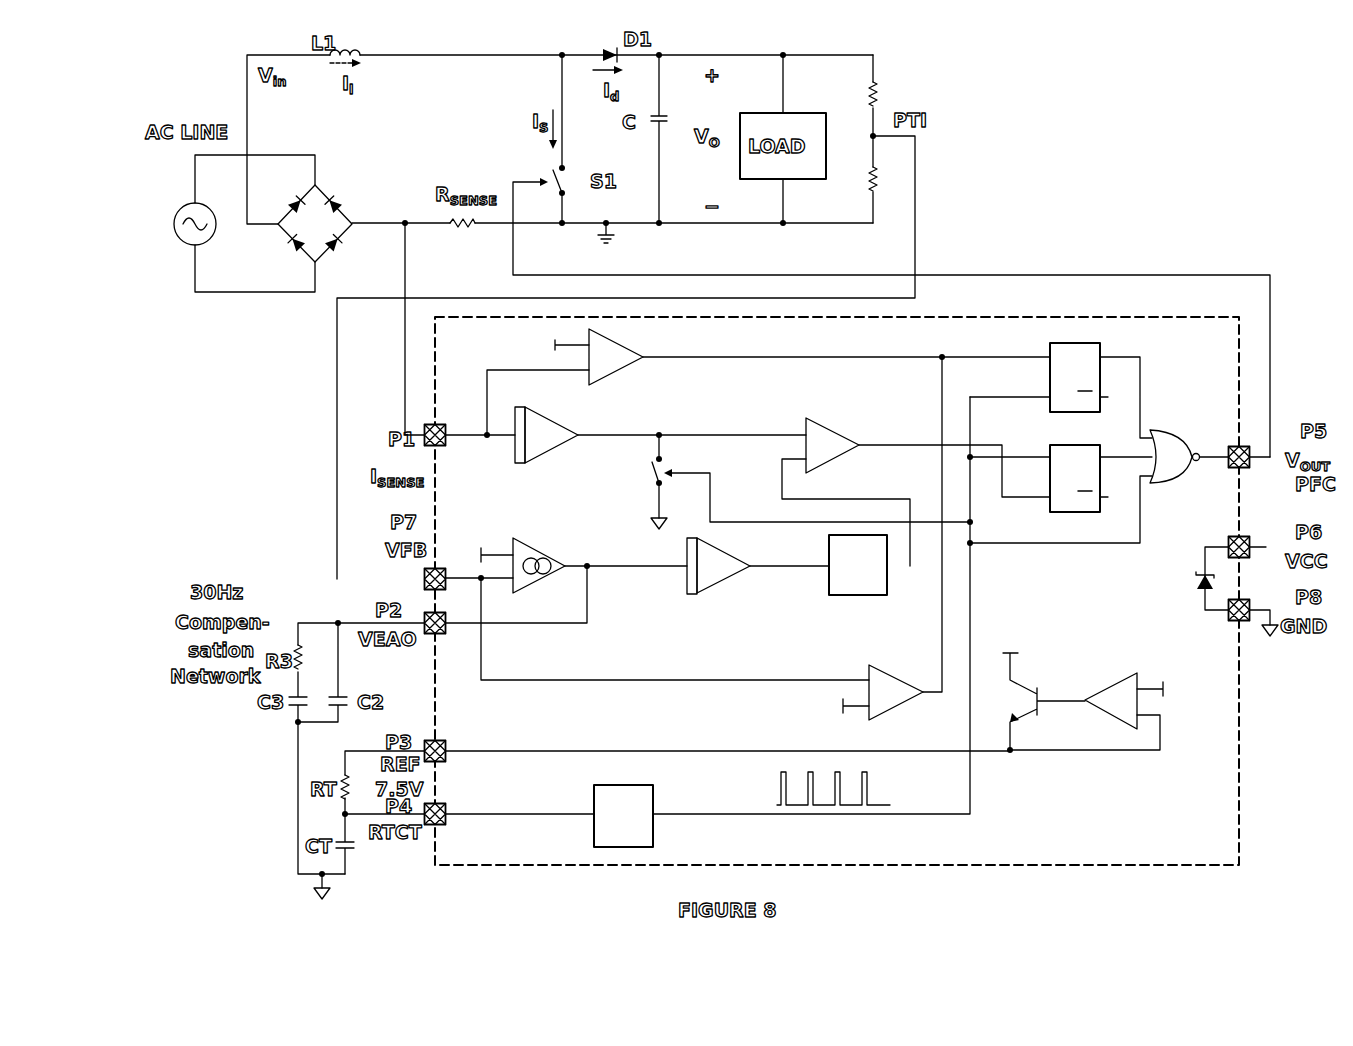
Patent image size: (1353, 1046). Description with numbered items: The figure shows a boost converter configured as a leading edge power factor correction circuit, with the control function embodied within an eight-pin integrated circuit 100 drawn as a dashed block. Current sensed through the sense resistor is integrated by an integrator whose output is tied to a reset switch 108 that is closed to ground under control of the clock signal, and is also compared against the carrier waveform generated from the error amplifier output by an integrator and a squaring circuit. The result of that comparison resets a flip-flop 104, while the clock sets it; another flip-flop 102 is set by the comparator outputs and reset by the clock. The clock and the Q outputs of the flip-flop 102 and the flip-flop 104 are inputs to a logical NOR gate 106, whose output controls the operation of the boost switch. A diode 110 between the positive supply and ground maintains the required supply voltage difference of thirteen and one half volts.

The power factor correction circuit 100 is at (1120, 312).
The flip-flop 102 is at (1040, 348).
The flip-flop 104 is at (1044, 436).
The logical NOR gate 106 is at (1160, 436).
The reset switch 108 is at (645, 487).
The diode 110 is at (1190, 586).